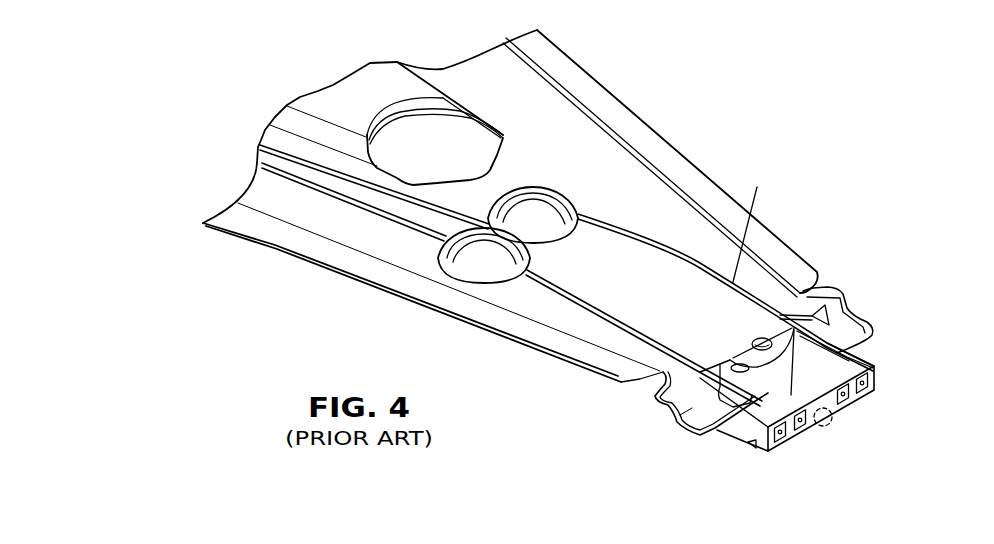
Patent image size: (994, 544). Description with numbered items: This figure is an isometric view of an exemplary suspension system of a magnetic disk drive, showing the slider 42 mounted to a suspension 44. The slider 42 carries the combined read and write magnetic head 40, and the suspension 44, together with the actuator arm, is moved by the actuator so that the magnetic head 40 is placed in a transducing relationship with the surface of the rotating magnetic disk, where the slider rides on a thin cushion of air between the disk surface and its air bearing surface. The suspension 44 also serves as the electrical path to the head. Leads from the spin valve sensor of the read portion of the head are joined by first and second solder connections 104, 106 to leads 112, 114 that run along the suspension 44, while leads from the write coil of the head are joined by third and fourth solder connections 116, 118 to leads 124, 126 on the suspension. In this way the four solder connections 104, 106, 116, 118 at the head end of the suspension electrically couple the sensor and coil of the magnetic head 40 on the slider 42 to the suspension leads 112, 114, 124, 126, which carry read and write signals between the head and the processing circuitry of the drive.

The magnetic head 40 is at (836, 432).
The slider 42 is at (720, 443).
The suspension 44 is at (684, 145).
The first solder connection 104 is at (774, 437).
The second solder connection 106 is at (867, 383).
The lead 112 is at (548, 296).
The lead 114 is at (757, 187).
The third solder connection 116 is at (797, 424).
The fourth solder connection 118 is at (847, 400).
The lead 124 is at (598, 311).
The lead 126 is at (655, 247).